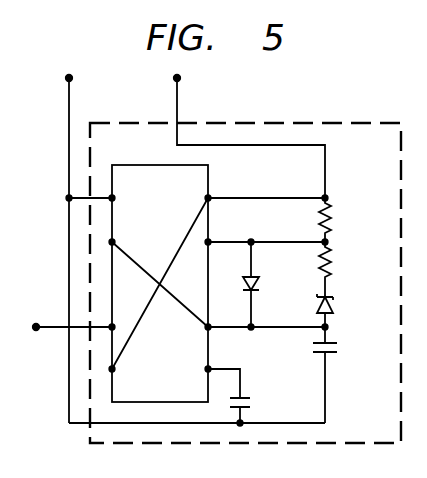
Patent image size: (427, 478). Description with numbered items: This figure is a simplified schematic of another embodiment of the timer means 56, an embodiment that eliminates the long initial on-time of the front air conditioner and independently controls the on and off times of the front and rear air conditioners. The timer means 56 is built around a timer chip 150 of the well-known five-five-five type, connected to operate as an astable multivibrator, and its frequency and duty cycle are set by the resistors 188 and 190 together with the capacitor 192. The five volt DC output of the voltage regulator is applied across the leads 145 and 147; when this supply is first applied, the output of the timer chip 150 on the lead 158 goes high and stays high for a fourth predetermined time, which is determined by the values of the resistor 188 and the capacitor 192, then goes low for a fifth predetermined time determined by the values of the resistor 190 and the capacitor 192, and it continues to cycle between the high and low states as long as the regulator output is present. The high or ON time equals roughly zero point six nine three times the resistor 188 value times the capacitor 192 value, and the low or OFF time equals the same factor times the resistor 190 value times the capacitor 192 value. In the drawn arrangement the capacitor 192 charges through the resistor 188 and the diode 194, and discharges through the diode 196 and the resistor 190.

The timer means 56 is at (313, 123).
The lead 147 is at (69, 112).
The lead 145 is at (177, 112).
The lead 158 is at (58, 330).
The 555 timer chip 150 is at (209, 172).
The resistor 188 is at (329, 207).
The resistor 190 is at (329, 253).
The diode 196 is at (331, 300).
The capacitor 192 is at (336, 344).
The diode 194 is at (258, 284).